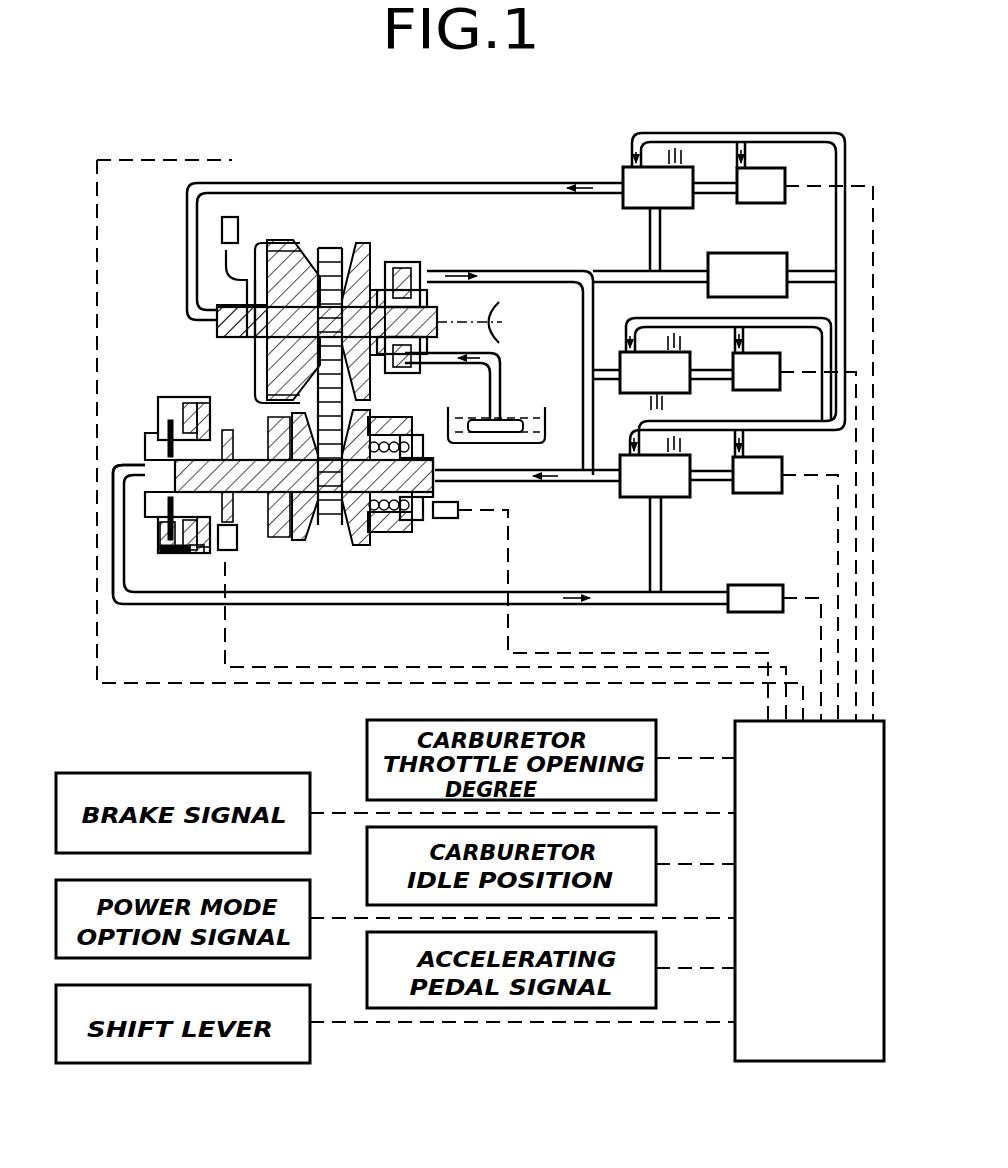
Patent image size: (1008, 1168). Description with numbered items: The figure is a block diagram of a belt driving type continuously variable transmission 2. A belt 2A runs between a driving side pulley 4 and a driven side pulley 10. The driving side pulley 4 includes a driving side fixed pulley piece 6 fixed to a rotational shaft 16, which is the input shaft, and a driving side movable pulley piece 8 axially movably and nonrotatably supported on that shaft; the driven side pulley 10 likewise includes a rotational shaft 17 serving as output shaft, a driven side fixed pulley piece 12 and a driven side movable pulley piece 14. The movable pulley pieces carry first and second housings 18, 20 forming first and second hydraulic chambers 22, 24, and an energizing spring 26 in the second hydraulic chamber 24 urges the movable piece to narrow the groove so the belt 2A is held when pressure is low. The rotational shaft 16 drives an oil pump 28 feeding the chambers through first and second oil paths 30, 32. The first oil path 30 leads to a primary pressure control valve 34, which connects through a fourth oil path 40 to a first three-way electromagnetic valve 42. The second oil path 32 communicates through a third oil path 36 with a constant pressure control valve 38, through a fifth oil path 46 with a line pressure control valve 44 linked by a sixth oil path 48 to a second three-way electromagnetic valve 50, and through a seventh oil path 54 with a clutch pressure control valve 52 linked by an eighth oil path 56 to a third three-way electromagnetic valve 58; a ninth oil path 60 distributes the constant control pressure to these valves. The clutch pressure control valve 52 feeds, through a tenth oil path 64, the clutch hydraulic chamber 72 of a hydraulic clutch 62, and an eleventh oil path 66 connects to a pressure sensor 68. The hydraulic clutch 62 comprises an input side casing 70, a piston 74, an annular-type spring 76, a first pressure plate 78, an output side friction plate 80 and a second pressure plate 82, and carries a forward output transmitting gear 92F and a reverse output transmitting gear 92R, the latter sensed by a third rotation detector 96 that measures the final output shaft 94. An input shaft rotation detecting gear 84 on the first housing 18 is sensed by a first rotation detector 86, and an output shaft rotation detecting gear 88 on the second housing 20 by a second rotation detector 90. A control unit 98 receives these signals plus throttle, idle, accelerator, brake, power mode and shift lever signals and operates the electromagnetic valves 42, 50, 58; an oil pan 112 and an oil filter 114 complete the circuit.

The continuously variable transmission 2 is at (797, 103).
The belt 2A is at (334, 262).
The driving side pulley 4 is at (372, 215).
The driving side fixed pulley piece 6 is at (366, 250).
The driving side movable pulley piece 8 is at (330, 248).
The driven side pulley 10 is at (428, 527).
The driven side fixed pulley piece 12 is at (354, 545).
The driven side movable pulley piece 14 is at (380, 495).
The rotational shaft 16 is at (455, 296).
The rotational shaft 17 is at (300, 540).
The first housing 18 is at (262, 245).
The second housing 20 is at (398, 442).
The first hydraulic chamber 22 is at (240, 335).
The second hydraulic chamber 24 is at (396, 533).
The energizing spring 26 is at (420, 533).
The oil pump 28 is at (406, 272).
The first oil path 30 is at (545, 183).
The second oil path 32 is at (583, 271).
The primary pressure control valve 34 is at (658, 209).
The third oil path 36 is at (668, 284).
The constant pressure control valve 38 is at (772, 275).
The fourth oil path 40 is at (714, 195).
The first three-way electromagnetic valve 42 is at (805, 431).
The line pressure control valve 44 is at (725, 369).
The fifth oil path 46 is at (614, 381).
The sixth oil path 48 is at (716, 381).
The second three-way electromagnetic valve 50 is at (794, 524).
The clutch pressure control valve 52 is at (655, 466).
The seventh oil path 54 is at (605, 483).
The eighth oil path 56 is at (712, 483).
The third three-way electromagnetic valve 58 is at (785, 575).
The ninth oil path 60 is at (834, 133).
The hydraulic clutch 62 is at (160, 382).
The tenth oil path 64 is at (465, 604).
The eleventh oil path 66 is at (690, 592).
The pressure sensor 68 is at (770, 585).
The input side casing 70 is at (160, 405).
The clutch hydraulic chamber 72 is at (146, 442).
The piston 74 is at (152, 498).
The annular-type spring 76 is at (166, 540).
The first pressure plate 78 is at (178, 552).
The output side friction plate 80 is at (113, 600).
The second pressure plate 82 is at (176, 553).
The input shaft rotation detecting gear 84 is at (226, 265).
The input shaft first rotation detector 86 is at (232, 217).
The output shaft rotation detecting gear 88 is at (446, 440).
The output shaft second rotation detector 90 is at (460, 508).
The reverse output transmitting gear 92R is at (233, 430).
The forward output transmitting gear 92F is at (240, 522).
The final output shaft 94 is at (229, 551).
The third rotation detector 96 is at (200, 553).
The control unit 98 is at (810, 1062).
The oil pan 112 is at (512, 440).
The oil filter 114 is at (506, 422).